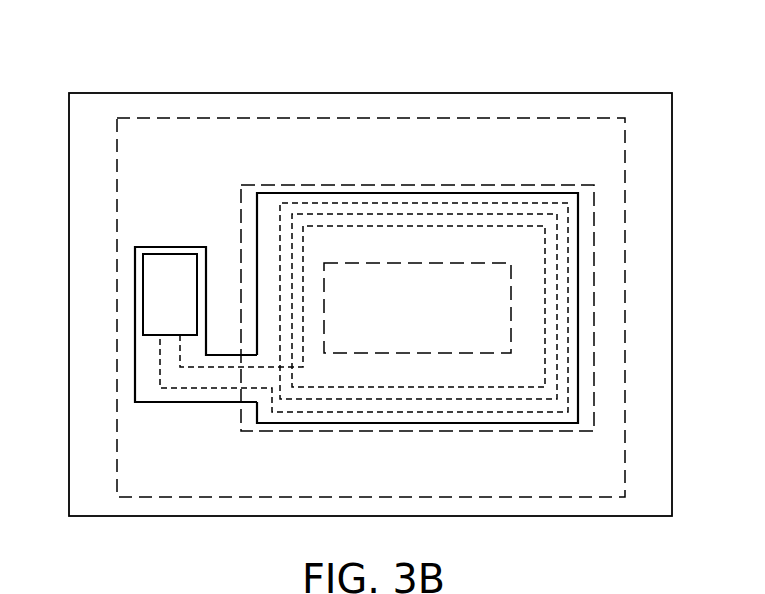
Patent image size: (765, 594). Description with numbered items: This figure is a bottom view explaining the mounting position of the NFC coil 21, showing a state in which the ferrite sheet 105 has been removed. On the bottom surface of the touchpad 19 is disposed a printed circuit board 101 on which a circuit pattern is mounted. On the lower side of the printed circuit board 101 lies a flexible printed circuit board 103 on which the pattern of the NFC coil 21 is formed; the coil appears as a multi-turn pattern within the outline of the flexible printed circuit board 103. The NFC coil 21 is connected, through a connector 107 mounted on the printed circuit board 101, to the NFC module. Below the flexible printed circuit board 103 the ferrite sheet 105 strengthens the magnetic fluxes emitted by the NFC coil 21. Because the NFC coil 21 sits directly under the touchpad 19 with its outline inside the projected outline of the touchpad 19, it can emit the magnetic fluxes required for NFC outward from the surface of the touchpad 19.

The printed circuit board 101 is at (372, 93).
The touchpad 19 is at (569, 118).
The ferrite sheet 105 is at (437, 185).
The NFC coil 21 is at (542, 203).
The flexible printed circuit board 103 is at (159, 401).
The connector 107 is at (170, 265).